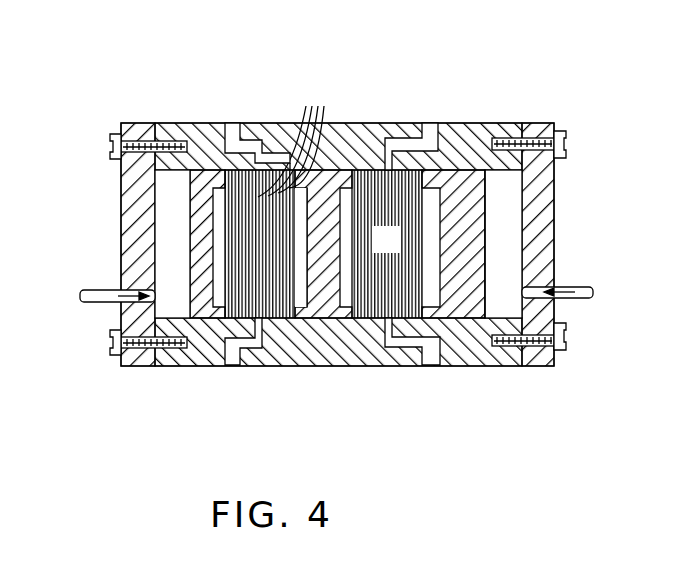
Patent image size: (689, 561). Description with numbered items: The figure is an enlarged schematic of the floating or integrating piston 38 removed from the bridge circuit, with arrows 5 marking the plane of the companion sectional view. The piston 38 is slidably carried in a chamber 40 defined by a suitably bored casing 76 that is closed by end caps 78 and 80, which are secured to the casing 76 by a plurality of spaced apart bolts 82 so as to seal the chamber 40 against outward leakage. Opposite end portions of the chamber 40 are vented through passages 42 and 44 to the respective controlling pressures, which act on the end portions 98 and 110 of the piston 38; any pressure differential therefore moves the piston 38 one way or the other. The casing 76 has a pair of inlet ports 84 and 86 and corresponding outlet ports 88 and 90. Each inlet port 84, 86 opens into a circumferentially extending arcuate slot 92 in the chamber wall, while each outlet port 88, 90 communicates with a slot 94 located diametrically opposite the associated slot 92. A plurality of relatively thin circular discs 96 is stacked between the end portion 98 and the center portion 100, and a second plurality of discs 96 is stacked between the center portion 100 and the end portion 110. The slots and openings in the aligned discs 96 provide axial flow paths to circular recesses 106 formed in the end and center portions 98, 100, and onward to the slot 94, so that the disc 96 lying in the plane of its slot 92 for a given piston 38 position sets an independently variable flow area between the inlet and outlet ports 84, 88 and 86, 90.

The section line 5- 5 is at (432, 108).
The floating piston 38 is at (188, 178).
The chamber 40 is at (170, 189).
The passage 42 is at (82, 296).
The passage 44 is at (586, 277).
The casing 76 is at (538, 122).
The end cap 78 is at (132, 232).
The end cap 80 is at (548, 206).
The bolt 82 is at (570, 139).
The inlet port 84 is at (196, 128).
The inlet port 86 is at (436, 140).
The outlet port 88 is at (223, 358).
The outlet port 90 is at (457, 354).
The arcuate slot 92 is at (283, 124).
The slot 94 is at (262, 340).
The circular disc 96 is at (398, 250).
The end portion 98 is at (195, 283).
The center portion 100 is at (310, 210).
The circular recess 106 is at (497, 127).
The end portion 110 is at (482, 277).